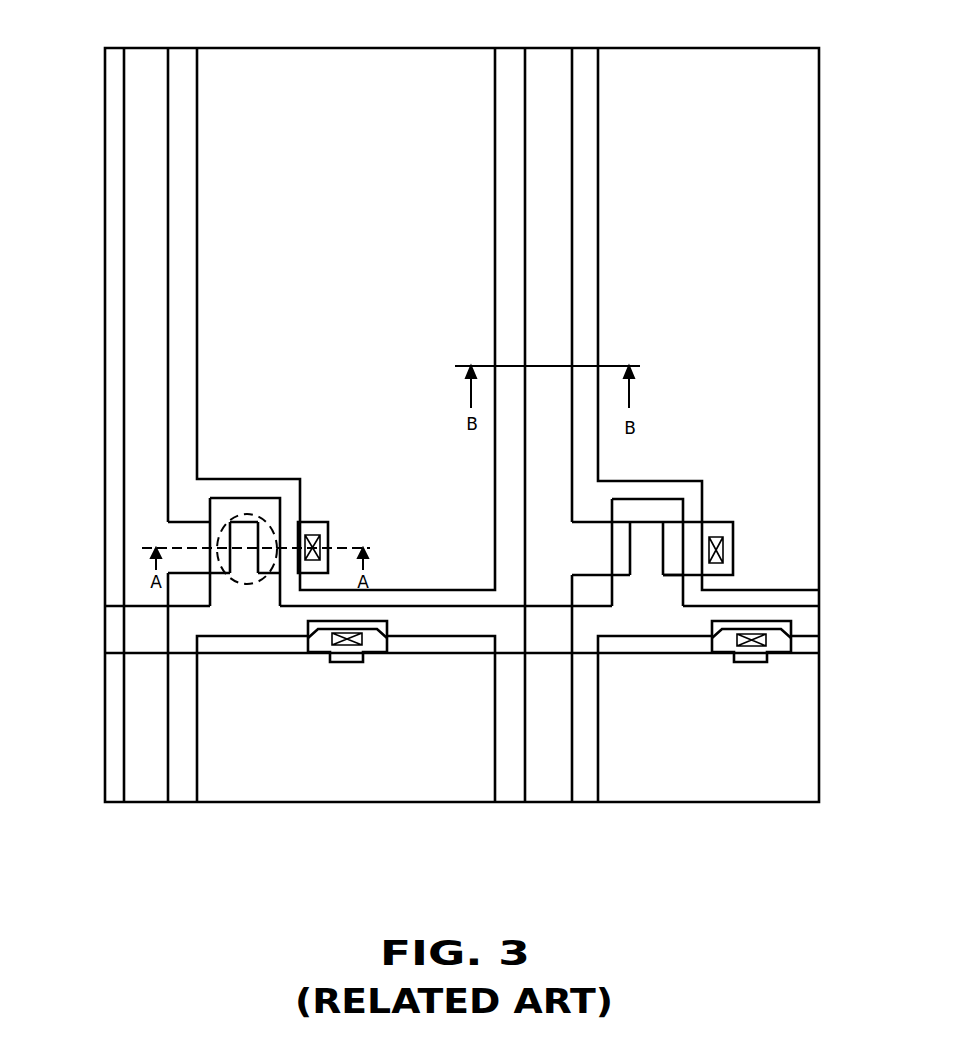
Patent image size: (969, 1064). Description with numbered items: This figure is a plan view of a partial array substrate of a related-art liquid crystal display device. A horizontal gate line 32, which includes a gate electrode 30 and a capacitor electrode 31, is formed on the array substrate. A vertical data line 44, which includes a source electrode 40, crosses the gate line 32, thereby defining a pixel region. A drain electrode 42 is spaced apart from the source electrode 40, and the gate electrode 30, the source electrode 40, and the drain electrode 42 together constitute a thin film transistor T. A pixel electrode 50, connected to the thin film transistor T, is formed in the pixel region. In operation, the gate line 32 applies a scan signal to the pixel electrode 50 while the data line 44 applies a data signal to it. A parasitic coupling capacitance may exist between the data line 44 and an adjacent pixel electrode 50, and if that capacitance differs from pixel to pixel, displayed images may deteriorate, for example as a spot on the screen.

The data line 44 is at (137, 498).
The pixel electrode 50 is at (788, 349).
The capacitor electrode 31 is at (417, 643).
The gate line 32 is at (453, 622).
The source electrode 40 is at (196, 534).
The drain electrode 42 is at (290, 537).
The gate electrode 30 is at (258, 508).
The thin film transistor T is at (228, 576).